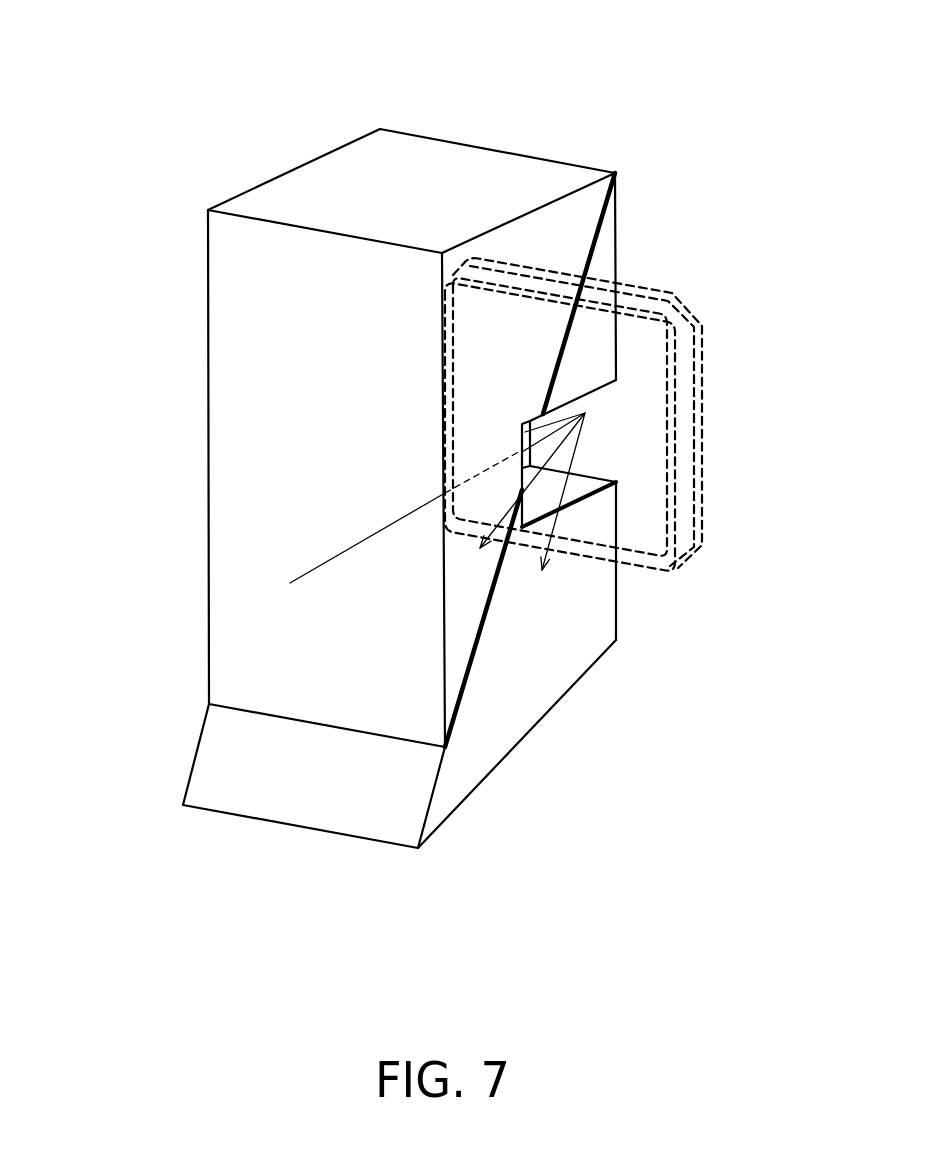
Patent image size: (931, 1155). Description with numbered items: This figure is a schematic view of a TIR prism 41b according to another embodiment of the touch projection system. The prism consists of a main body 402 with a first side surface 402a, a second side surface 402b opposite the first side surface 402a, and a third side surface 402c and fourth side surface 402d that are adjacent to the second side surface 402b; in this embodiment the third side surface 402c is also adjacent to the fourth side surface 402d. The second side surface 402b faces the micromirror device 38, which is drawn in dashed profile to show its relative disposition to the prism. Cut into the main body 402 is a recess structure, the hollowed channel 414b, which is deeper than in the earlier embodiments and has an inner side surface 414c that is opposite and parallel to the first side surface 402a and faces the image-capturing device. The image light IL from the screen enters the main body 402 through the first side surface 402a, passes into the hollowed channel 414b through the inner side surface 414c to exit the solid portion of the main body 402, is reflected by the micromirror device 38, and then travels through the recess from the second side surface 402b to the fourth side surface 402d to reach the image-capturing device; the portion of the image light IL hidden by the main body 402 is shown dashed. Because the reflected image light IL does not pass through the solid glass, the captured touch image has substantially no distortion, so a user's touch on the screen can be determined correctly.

The TIR prism 41b is at (176, 80).
The main body 402 is at (320, 185).
The first side surface 402a is at (208, 420).
The second side surface 402b is at (617, 232).
The third side surface 402c is at (468, 795).
The fourth side surface 402d is at (550, 650).
The micromirror device 38 is at (705, 352).
The hollowed channel 414b is at (595, 438).
The inner side surface 414c is at (523, 428).
The image light IL is at (330, 560).